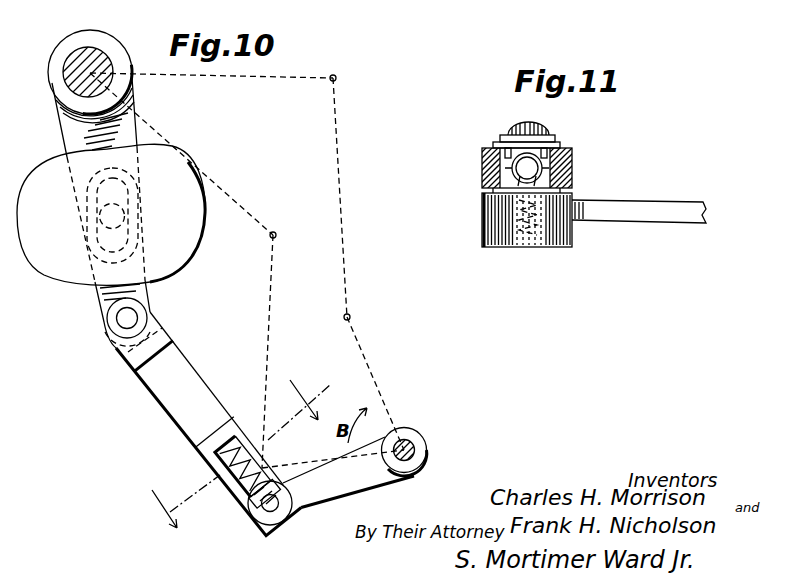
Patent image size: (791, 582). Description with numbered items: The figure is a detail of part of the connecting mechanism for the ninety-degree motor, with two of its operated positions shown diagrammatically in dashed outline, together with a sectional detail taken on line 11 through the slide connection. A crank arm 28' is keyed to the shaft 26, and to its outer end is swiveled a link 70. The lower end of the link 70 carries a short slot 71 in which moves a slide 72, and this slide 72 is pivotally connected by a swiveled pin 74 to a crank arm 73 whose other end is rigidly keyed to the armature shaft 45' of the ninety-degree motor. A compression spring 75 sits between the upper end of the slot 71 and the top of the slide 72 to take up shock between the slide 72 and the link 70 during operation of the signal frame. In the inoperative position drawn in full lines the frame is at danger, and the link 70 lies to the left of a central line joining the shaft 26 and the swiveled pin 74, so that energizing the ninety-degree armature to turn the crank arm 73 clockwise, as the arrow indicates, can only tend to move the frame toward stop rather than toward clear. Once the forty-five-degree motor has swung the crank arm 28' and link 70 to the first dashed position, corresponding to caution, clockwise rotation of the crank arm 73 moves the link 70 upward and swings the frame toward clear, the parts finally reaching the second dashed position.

In FIG. 10, the shaft 26 is at (74, 56).
In FIG. 10, the crank arm 28' is at (235, 245).
In FIG. 10, the link 70 is at (343, 203).
In FIG. 11, the link 70 is at (572, 160).
In FIG. 10, the slot 71 is at (228, 460).
In FIG. 10, the slide 72 is at (243, 497).
In FIG. 11, the slide 72 is at (545, 173).
In FIG. 10, the crank arm 73 is at (372, 373).
In FIG. 11, the crank arm 73 is at (625, 213).
In FIG. 10, the swiveled pin 74 is at (273, 506).
In FIG. 11, the swiveled pin 74 is at (541, 130).
In FIG. 10, the compression spring 75 is at (243, 437).
In FIG. 11, the compression spring 75 is at (515, 180).
In FIG. 10, the armature shaft 45' is at (425, 443).
In FIG. 10, the section line 11 is at (231, 460).